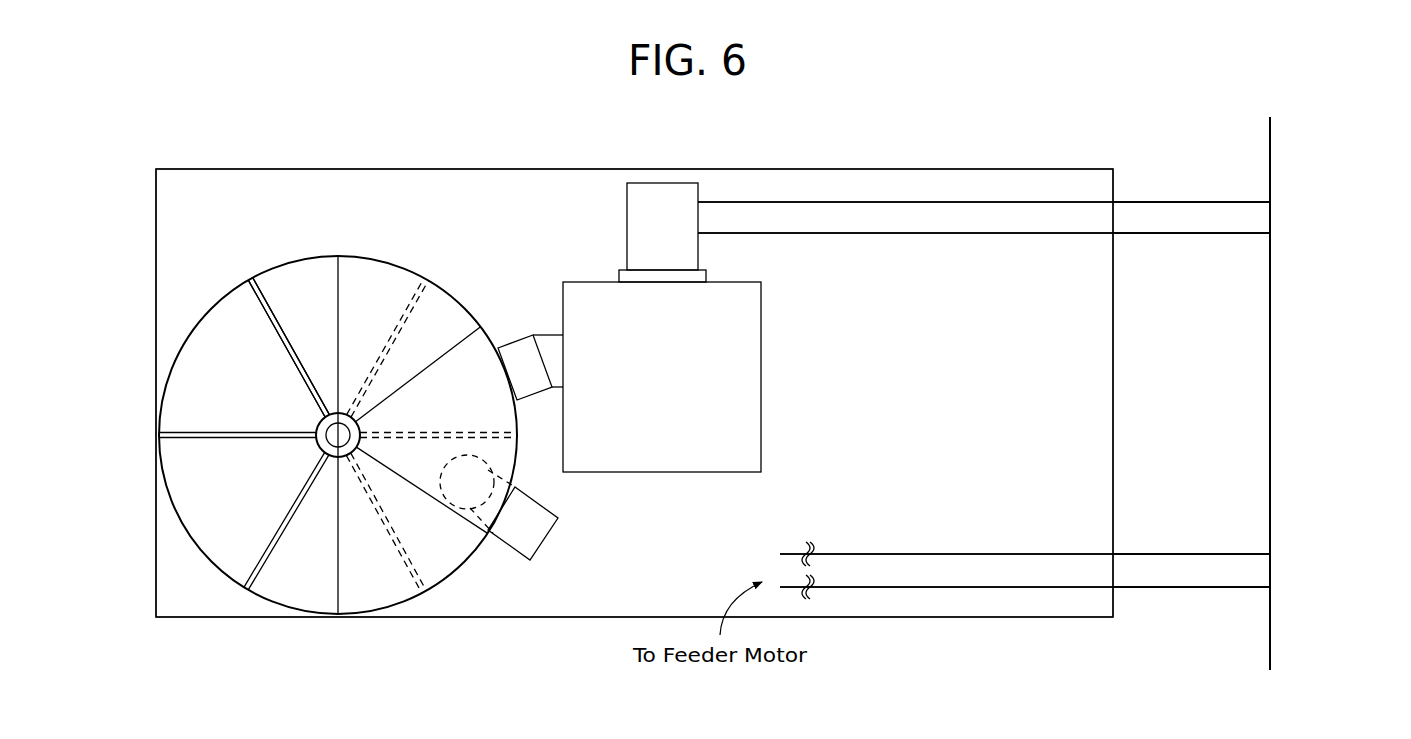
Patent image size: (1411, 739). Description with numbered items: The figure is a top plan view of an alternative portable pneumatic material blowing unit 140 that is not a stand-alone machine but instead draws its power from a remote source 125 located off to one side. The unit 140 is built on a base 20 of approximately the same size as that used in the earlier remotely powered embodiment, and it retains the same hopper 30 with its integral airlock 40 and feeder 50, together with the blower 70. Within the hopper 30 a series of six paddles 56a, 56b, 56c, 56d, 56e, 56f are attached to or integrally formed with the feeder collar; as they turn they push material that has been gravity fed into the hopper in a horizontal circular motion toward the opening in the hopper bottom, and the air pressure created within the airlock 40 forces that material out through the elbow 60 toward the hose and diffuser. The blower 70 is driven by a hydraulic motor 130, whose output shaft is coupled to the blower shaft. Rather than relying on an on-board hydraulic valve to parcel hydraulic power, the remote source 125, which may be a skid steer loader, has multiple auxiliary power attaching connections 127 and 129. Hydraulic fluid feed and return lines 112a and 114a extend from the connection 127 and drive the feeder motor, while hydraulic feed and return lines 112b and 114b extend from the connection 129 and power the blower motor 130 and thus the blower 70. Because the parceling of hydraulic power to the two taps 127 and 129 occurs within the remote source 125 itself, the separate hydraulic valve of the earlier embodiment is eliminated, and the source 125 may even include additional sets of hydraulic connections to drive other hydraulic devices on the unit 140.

The unit 140 is at (256, 78).
The base 20 is at (206, 195).
The hopper 30 is at (214, 290).
The feeder 50 is at (266, 292).
The paddle 56a is at (190, 442).
The paddle 56b is at (278, 518).
The paddle 56c is at (417, 560).
The paddle 56d is at (455, 430).
The paddle 56e is at (400, 315).
The paddle 56f is at (277, 342).
The airlock 40 is at (460, 336).
The elbow 60 is at (546, 543).
The blower 70 is at (662, 377).
The hydraulic motor 130 is at (627, 227).
The hydraulic fluid feed line 112a is at (862, 553).
The hydraulic feed line 112b is at (890, 201).
The hydraulic fluid return line 114a is at (962, 588).
The hydraulic return line 114b is at (917, 234).
The remote power source 125 is at (1301, 149).
The auxiliary power attaching connection 127 is at (1270, 568).
The auxiliary power attaching connection 129 is at (1270, 219).